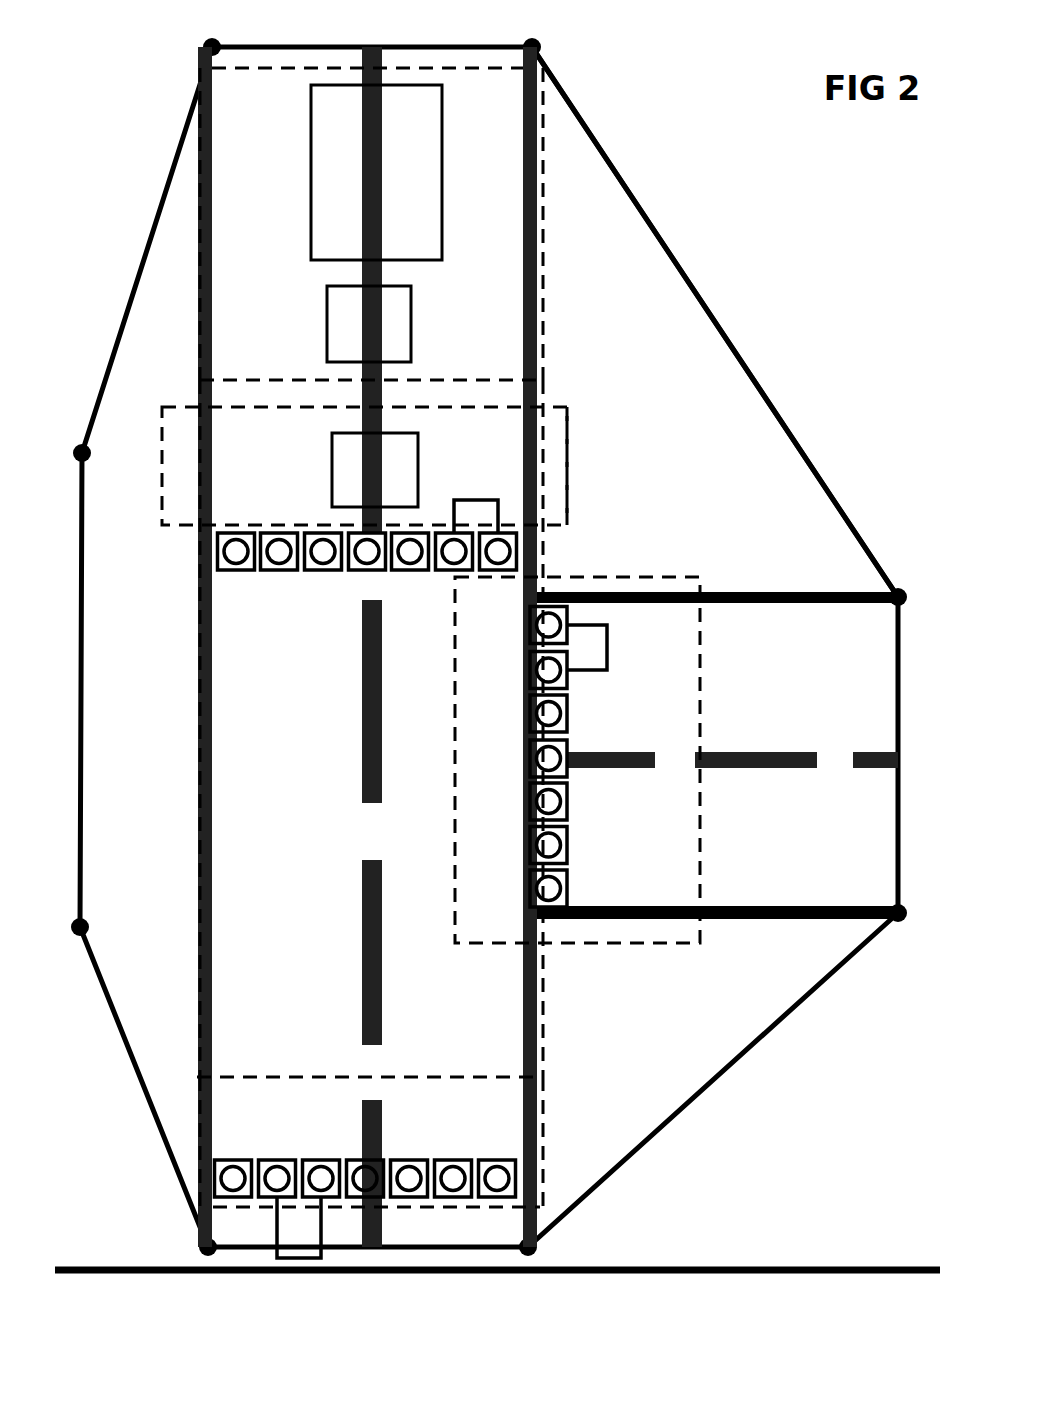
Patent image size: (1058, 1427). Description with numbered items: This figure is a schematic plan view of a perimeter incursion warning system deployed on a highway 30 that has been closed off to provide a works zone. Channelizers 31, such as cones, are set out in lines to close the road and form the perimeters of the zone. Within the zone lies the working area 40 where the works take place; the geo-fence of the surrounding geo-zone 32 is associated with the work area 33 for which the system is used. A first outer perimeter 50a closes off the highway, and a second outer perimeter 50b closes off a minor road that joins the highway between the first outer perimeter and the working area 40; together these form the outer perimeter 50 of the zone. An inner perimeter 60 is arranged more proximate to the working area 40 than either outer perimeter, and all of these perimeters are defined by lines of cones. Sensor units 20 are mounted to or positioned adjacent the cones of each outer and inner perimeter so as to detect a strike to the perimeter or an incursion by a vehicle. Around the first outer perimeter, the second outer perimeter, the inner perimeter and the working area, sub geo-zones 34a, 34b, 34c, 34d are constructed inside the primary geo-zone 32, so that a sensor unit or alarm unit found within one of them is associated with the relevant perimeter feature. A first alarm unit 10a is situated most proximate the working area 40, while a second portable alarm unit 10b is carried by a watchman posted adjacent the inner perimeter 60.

The first alarm unit 10a is at (369, 324).
The second portable alarm unit 10b is at (375, 470).
The sensor unit 20 is at (279, 570).
The highway 30 is at (495, 398).
The channelizers 31 is at (551, 569).
The geo-zone 32 is at (783, 413).
The work area 33 is at (658, 353).
The sub geo-zone 34a is at (203, 298).
The sub geo-zone 34b is at (570, 432).
The sub geo-zone 34c is at (690, 577).
The sub geo-zone 34d is at (538, 1127).
The working area 40 is at (376, 172).
The outer perimeter 50 is at (298, 1245).
The first outer perimeter 50a is at (247, 1142).
The second outer perimeter 50b is at (580, 888).
The inner perimeter 60 is at (247, 475).